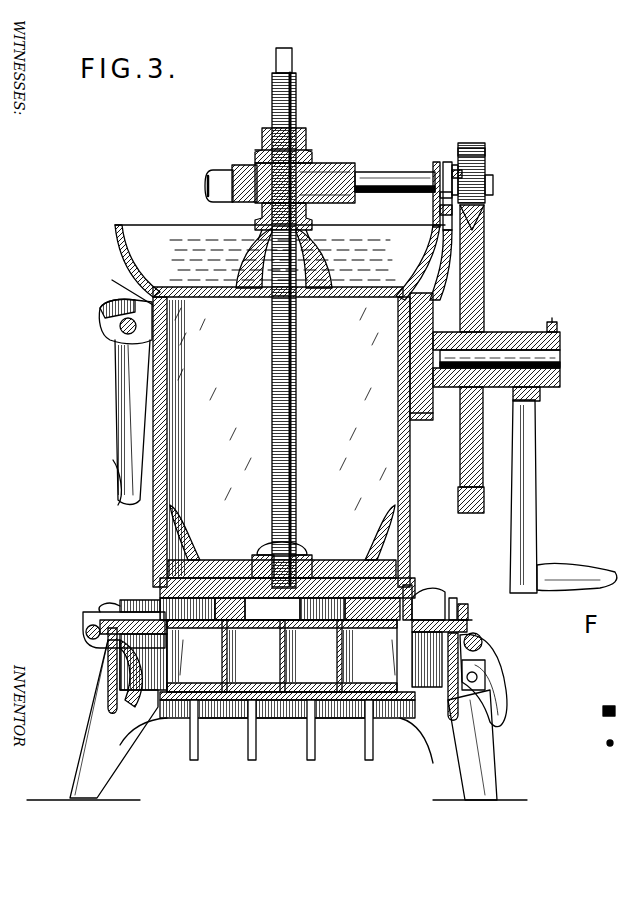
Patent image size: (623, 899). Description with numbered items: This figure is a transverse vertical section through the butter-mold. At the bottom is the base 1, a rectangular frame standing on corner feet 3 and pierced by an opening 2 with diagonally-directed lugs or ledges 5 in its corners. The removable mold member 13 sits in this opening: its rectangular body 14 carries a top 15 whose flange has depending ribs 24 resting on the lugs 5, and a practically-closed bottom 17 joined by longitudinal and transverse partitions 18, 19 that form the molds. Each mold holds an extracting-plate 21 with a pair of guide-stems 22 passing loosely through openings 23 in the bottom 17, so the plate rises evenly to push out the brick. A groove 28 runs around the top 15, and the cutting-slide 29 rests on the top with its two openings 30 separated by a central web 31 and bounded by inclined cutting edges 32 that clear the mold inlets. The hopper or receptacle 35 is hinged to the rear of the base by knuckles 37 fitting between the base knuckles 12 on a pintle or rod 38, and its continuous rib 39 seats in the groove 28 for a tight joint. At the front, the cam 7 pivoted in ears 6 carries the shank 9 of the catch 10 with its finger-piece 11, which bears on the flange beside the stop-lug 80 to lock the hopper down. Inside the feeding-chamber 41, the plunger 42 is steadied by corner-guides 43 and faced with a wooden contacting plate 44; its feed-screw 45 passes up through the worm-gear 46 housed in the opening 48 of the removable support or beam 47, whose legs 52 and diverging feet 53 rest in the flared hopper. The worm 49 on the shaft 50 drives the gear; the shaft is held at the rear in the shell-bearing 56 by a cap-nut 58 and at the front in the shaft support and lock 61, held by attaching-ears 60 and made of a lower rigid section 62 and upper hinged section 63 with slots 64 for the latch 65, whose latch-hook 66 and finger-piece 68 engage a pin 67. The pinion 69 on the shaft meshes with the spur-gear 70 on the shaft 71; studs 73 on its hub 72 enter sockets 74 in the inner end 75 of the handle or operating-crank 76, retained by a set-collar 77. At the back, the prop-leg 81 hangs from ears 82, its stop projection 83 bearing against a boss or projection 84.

The base 1 is at (418, 720).
The opening 2 is at (462, 604).
The corner feet 3 is at (90, 775).
The lugs or ledges 5 is at (108, 660).
The ears 6 is at (468, 630).
The operating element or cam 7 is at (500, 716).
The shank 9 is at (488, 672).
The catch 10 is at (451, 598).
The finger-piece 11 is at (470, 620).
The apertured knuckles 12 is at (85, 632).
The removable mold member 13 is at (135, 730).
The rectangular body 14 is at (120, 690).
The top 15 is at (425, 590).
The bottom 17 is at (286, 718).
The longitudinal partitions 18 is at (282, 656).
The transverse partitions 19 is at (261, 656).
The extracting-plates 21 is at (180, 675).
The guide-stems 22 is at (198, 765).
The openings 23 is at (228, 720).
The depending ribs 24 is at (118, 650).
The groove 28 is at (440, 600).
The cutting-slide 29 is at (135, 620).
The rectangular openings 30 is at (255, 608).
The central web 31 is at (272, 608).
The cutting edges 32 is at (307, 608).
The hopper or receptacle 35 is at (410, 477).
The knuckles 37 is at (105, 612).
The pintle or rod 38 is at (88, 638).
The continuous rib 39 is at (150, 612).
The feeding-chamber 41 is at (212, 540).
The plunger 42 is at (335, 560).
The corner-guides 43 is at (175, 540).
The contacting plate 44 is at (238, 575).
The feed-screw 45 is at (296, 367).
The worm-gear 46 is at (335, 168).
The removable support or beam 47 is at (258, 140).
The opening 48 is at (308, 148).
The worm 49 is at (240, 170).
The shaft 50 is at (385, 178).
The vertical legs 52 is at (308, 232).
The feet 53 is at (242, 268).
The shell-bearing 56 is at (262, 218).
The cap-nut 58 is at (208, 186).
The attaching-ears 60 is at (436, 238).
The shaft support and lock 61 is at (436, 165).
The lower rigid section 62 is at (493, 188).
The upper hinged section 63 is at (452, 170).
The slots 64 is at (395, 184).
The latch 65 is at (495, 173).
The latch-hook 66 is at (440, 220).
The pin 67 is at (485, 225).
The finger-piece 68 is at (440, 196).
The pinion 69 is at (478, 160).
The spur-gear 70 is at (485, 290).
The shaft 71 is at (560, 362).
The hub 72 is at (495, 332).
The studs 73 is at (520, 340).
The sockets 74 is at (510, 400).
The inner end 75 is at (535, 420).
The handle or operating-crank 76 is at (530, 520).
The set-collar 77 is at (560, 380).
The stop-lug 80 is at (408, 585).
The prop-leg 81 is at (118, 405).
The ears 82 is at (112, 332).
The stop projection 83 is at (120, 312).
The boss or projection 84 is at (140, 296).